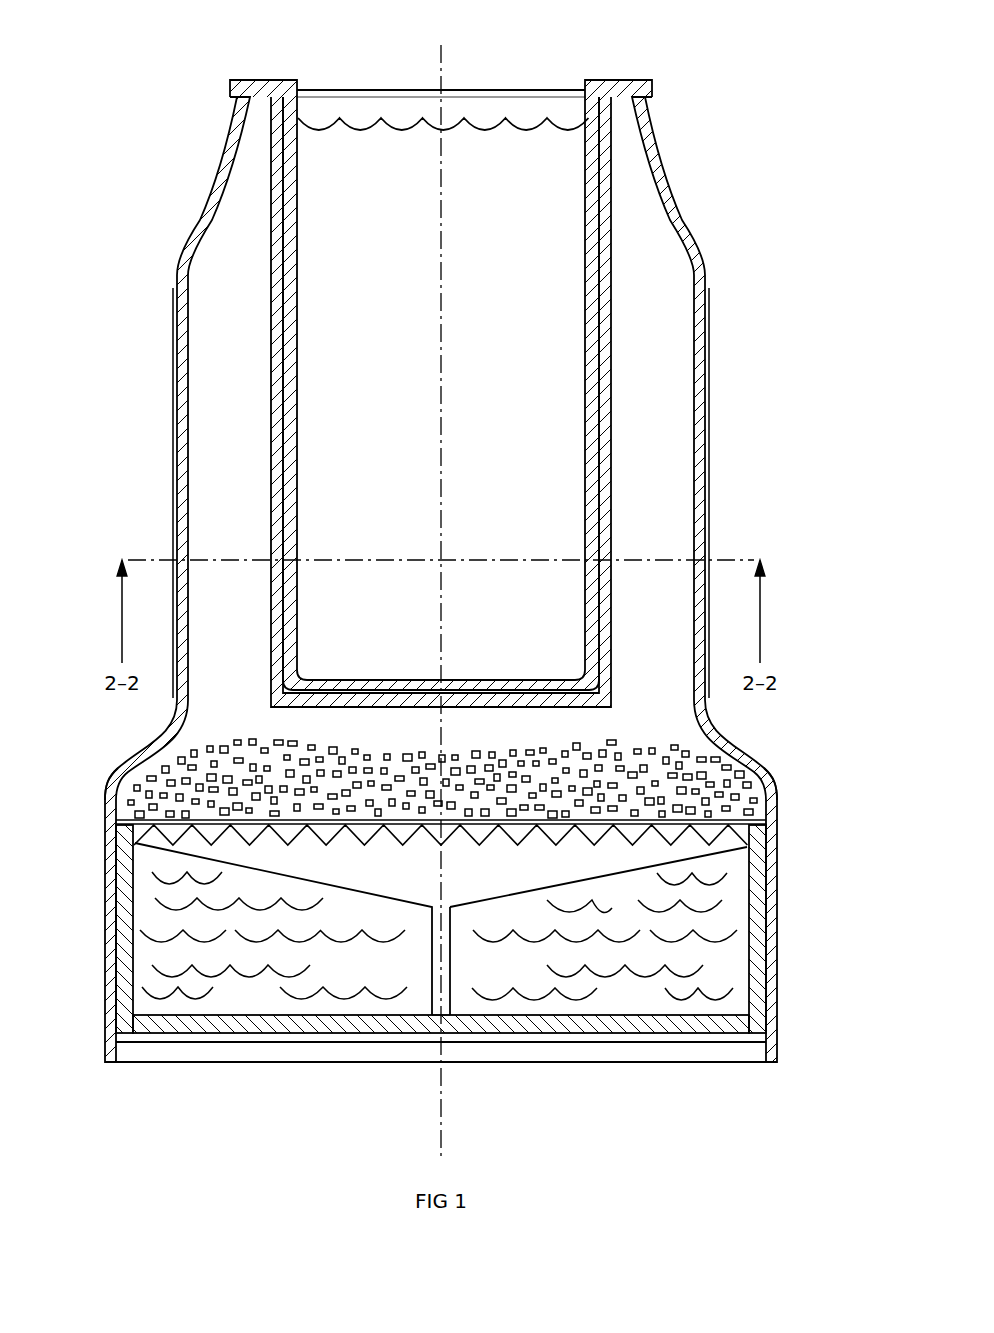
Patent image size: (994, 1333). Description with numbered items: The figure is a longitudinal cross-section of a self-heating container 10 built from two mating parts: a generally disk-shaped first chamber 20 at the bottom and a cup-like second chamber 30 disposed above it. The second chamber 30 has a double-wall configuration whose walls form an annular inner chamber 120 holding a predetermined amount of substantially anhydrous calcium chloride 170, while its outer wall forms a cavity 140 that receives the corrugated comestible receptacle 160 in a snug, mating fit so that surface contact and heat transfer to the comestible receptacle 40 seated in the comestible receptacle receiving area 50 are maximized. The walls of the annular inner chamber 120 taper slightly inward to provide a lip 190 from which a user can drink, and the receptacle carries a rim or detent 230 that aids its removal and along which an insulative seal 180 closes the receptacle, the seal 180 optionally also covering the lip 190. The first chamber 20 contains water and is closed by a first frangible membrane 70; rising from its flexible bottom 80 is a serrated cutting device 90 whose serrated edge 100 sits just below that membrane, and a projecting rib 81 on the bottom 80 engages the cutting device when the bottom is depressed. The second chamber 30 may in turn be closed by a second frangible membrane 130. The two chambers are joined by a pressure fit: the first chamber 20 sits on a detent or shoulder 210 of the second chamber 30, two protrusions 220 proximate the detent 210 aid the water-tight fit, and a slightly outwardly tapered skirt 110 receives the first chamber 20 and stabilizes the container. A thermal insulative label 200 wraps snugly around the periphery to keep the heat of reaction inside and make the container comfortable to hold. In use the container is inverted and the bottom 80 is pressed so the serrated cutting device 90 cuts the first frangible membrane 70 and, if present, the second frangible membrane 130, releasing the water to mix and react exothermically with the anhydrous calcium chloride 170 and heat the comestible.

The self-heating container 10 is at (710, 300).
The first chamber 20 is at (778, 965).
The second chamber 30 is at (200, 478).
The comestible receptacle 40 is at (525, 160).
The comestible receptacle receiving area 50 is at (597, 288).
The first frangible membrane 70 is at (640, 817).
The bottom 80 is at (441, 1070).
The projecting rib 81 is at (448, 967).
The serrated cutting device 90 is at (490, 867).
The serrated edge 100 is at (362, 840).
The skirt 110 is at (105, 1063).
The annular inner chamber 120 is at (210, 345).
The second frangible membrane 130 is at (265, 818).
The cavity 140 is at (601, 680).
The comestible receptacle 160 is at (355, 128).
The anhydrous calcium chloride 170 is at (118, 790).
The insulative seal 180 is at (418, 92).
The lip 190 is at (258, 108).
The thermal insulative label 200 is at (696, 510).
The detent or shoulder 210 is at (116, 828).
The protrusions 220 is at (118, 935).
The rim or detent 230 is at (252, 80).